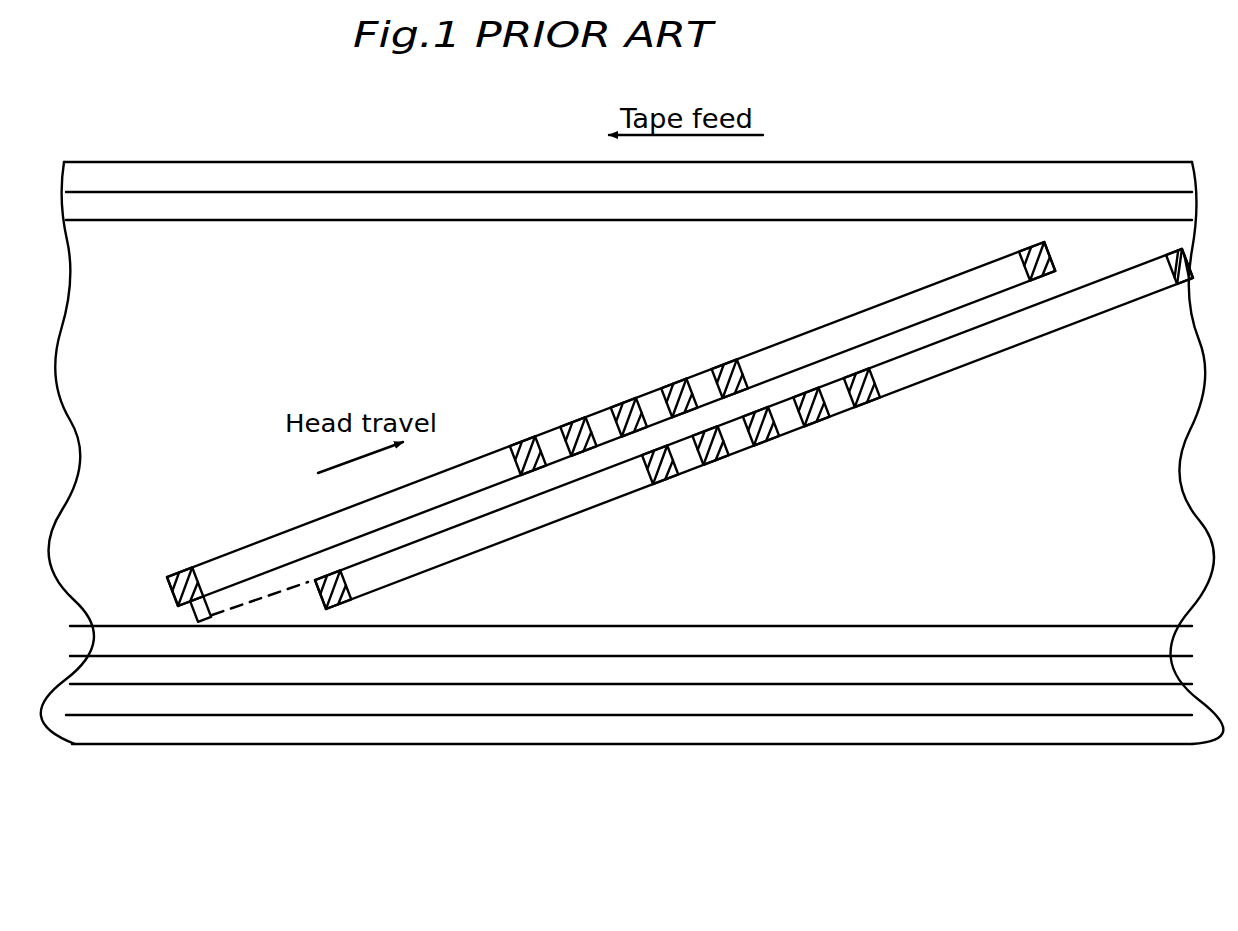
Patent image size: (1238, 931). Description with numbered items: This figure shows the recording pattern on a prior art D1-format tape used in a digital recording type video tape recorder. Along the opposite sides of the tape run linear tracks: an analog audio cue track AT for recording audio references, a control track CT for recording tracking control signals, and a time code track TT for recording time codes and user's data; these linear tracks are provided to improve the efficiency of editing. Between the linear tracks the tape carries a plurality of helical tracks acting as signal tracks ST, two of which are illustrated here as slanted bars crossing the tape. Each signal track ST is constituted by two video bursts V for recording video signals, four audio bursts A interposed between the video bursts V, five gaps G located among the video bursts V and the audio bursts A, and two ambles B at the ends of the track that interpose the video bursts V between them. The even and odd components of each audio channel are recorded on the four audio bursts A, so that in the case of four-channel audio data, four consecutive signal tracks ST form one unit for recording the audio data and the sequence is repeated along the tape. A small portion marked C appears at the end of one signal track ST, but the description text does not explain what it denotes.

The analog audio cue track AT is at (788, 210).
The control track CT is at (903, 642).
The time code track TT is at (673, 698).
The video burst V is at (933, 302).
The amble B is at (1053, 265).
The chip C is at (197, 620).
The gap G is at (720, 372).
The audio burst A is at (833, 405).
The signal track ST is at (650, 525).